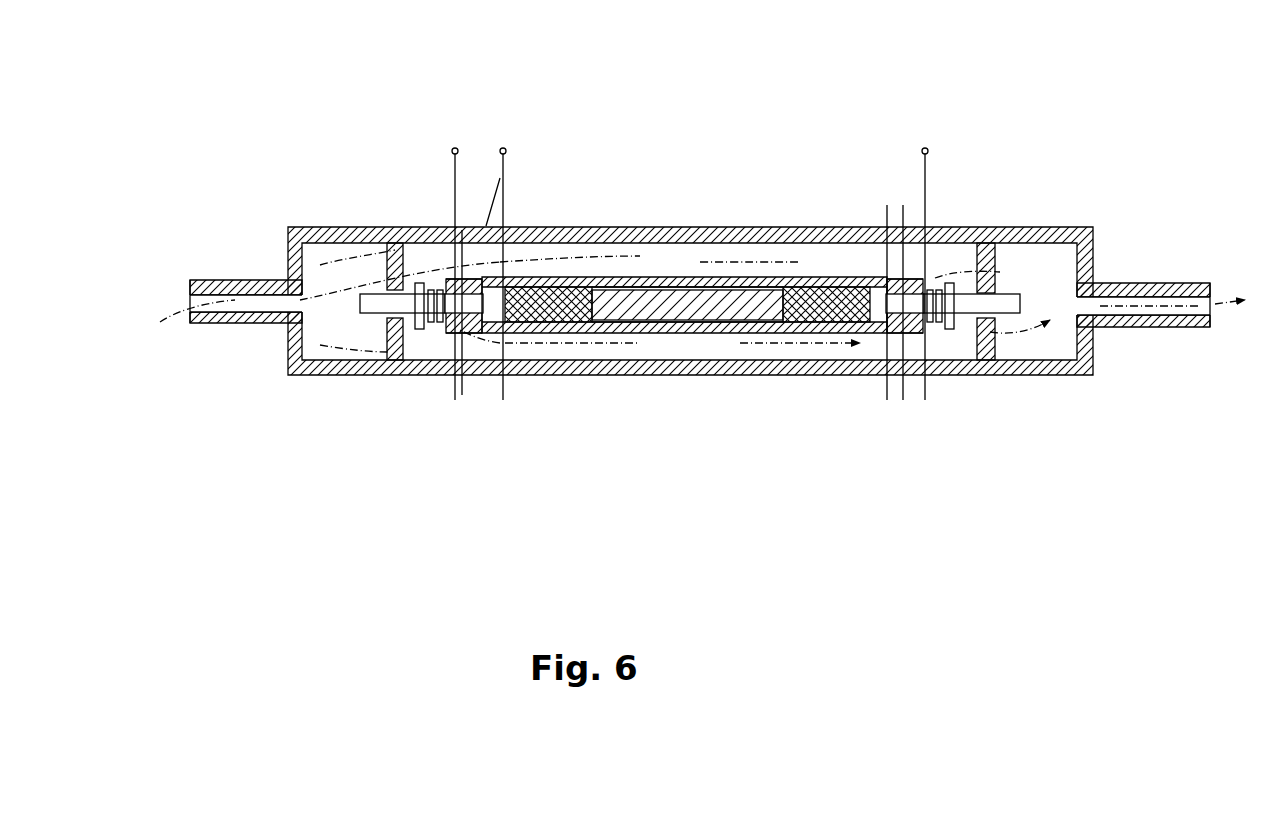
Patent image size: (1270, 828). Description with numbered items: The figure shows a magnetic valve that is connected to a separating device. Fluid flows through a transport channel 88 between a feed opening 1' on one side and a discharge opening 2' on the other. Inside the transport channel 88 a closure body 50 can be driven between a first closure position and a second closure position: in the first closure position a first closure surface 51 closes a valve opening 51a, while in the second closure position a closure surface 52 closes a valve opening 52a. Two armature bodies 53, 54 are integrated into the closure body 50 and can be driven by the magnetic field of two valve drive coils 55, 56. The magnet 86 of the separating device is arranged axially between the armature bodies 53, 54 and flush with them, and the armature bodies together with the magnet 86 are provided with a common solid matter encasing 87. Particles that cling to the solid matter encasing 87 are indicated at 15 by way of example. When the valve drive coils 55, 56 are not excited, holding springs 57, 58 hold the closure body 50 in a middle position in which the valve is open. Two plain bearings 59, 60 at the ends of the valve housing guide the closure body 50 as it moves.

The feed opening 1' is at (231, 267).
The discharge opening 2' is at (1160, 276).
The particles 15 is at (688, 277).
The closure body 50 is at (796, 260).
The first closure surface 51 is at (482, 278).
The first valve opening 51a is at (480, 320).
The second closure surface 52 is at (912, 285).
The second valve opening 52a is at (886, 322).
The first armature body 53 is at (577, 324).
The second armature body 54 is at (830, 324).
The first valve drive coil 55 is at (464, 150).
The second valve drive coil 56 is at (904, 156).
The first holding spring 57 is at (432, 332).
The second holding spring 58 is at (955, 375).
The first plain bearing 59 is at (388, 320).
The second plain bearing 60 is at (992, 290).
The magnet 86 is at (719, 240).
The solid matter encasing 87 is at (737, 333).
The transport channel 88 is at (704, 300).